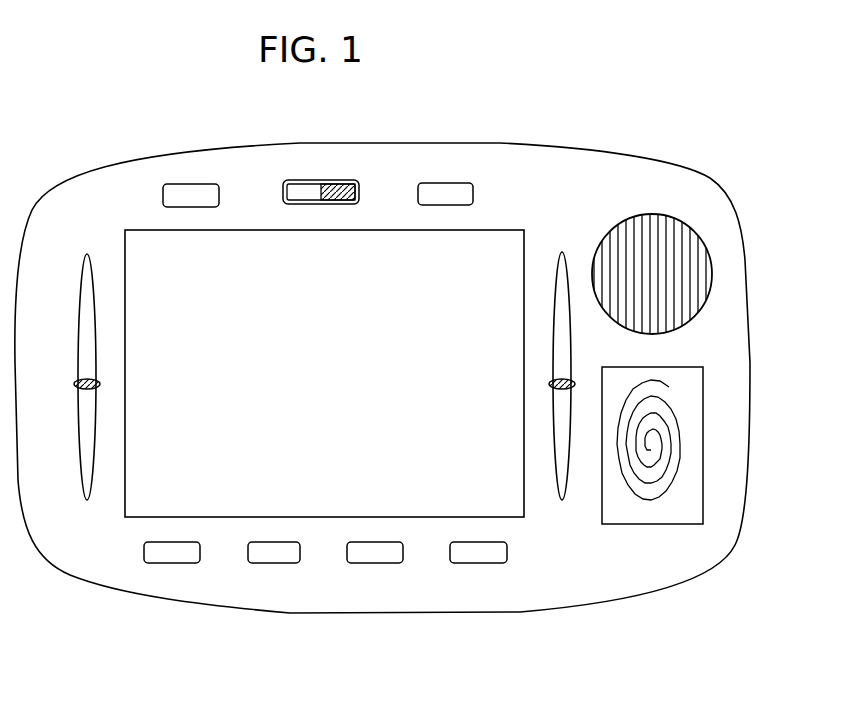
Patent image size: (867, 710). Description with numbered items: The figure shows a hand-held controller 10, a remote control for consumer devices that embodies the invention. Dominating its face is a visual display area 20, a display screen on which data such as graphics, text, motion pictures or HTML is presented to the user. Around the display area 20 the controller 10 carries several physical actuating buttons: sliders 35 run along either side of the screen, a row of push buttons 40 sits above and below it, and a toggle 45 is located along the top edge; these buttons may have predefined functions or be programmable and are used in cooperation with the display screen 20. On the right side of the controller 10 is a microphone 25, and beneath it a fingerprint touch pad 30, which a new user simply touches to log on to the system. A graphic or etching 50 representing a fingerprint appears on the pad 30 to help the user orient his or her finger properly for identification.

The controller 10 is at (435, 110).
The visual display area 20 is at (323, 501).
The microphone 25 is at (684, 256).
The fingerprint touch pad 30 is at (696, 375).
The sliders 35 is at (98, 383).
The push buttons 40 is at (190, 193).
The toggles 45 is at (310, 182).
The graphic or etching 50 is at (668, 455).